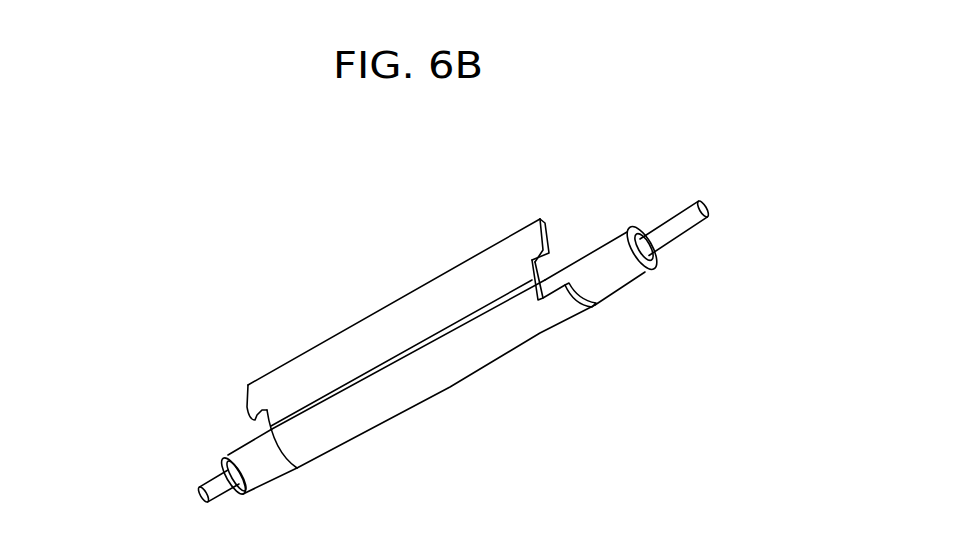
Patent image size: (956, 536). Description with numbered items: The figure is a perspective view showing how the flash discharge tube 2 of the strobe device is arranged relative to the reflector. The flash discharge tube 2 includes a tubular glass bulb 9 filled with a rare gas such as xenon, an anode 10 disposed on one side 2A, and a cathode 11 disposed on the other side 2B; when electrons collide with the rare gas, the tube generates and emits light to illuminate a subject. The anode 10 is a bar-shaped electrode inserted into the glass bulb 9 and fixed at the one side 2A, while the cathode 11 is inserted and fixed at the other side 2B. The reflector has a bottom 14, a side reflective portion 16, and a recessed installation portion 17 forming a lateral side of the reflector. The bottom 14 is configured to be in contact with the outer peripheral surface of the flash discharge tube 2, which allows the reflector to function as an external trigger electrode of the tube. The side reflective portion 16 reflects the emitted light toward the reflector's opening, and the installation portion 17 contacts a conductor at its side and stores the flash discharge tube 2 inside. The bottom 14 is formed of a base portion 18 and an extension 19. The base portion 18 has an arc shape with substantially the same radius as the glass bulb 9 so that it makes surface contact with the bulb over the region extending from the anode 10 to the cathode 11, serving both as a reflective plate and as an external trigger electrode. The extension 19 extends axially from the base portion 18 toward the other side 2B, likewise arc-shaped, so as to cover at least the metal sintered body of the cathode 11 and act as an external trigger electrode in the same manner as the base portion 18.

The flash discharge tube 2 is at (633, 122).
The one side 2A is at (245, 463).
The other side 2B is at (610, 242).
The tubular glass bulb 9 is at (270, 456).
The anode 10 is at (211, 492).
The cathode 11 is at (684, 222).
The bottom 14 is at (437, 453).
The side reflective portion 16 is at (452, 292).
The recessed installation portion 17 is at (539, 302).
The base portion 18 is at (438, 370).
The extension 19 is at (567, 312).